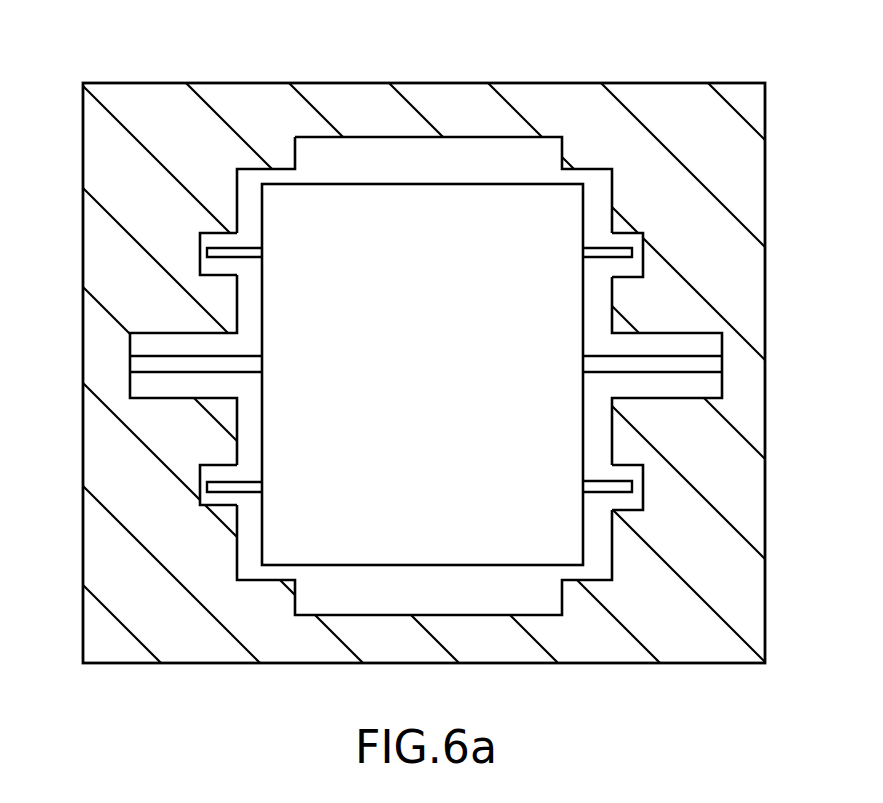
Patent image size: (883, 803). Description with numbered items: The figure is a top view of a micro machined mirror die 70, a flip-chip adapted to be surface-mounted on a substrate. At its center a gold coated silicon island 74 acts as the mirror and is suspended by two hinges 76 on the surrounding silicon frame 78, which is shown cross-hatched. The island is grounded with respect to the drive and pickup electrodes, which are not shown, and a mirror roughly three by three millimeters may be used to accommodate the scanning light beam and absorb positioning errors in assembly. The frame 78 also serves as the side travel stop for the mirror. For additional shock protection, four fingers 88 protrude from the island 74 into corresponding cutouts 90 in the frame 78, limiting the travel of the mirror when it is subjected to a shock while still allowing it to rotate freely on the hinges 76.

The micro machined mirror die 70 is at (768, 362).
The gold coated silicon island 74 is at (410, 377).
The hinges 76 is at (175, 355).
The silicon frame 78 is at (453, 105).
The fingers 88 is at (212, 232).
The cutouts 90 is at (205, 255).